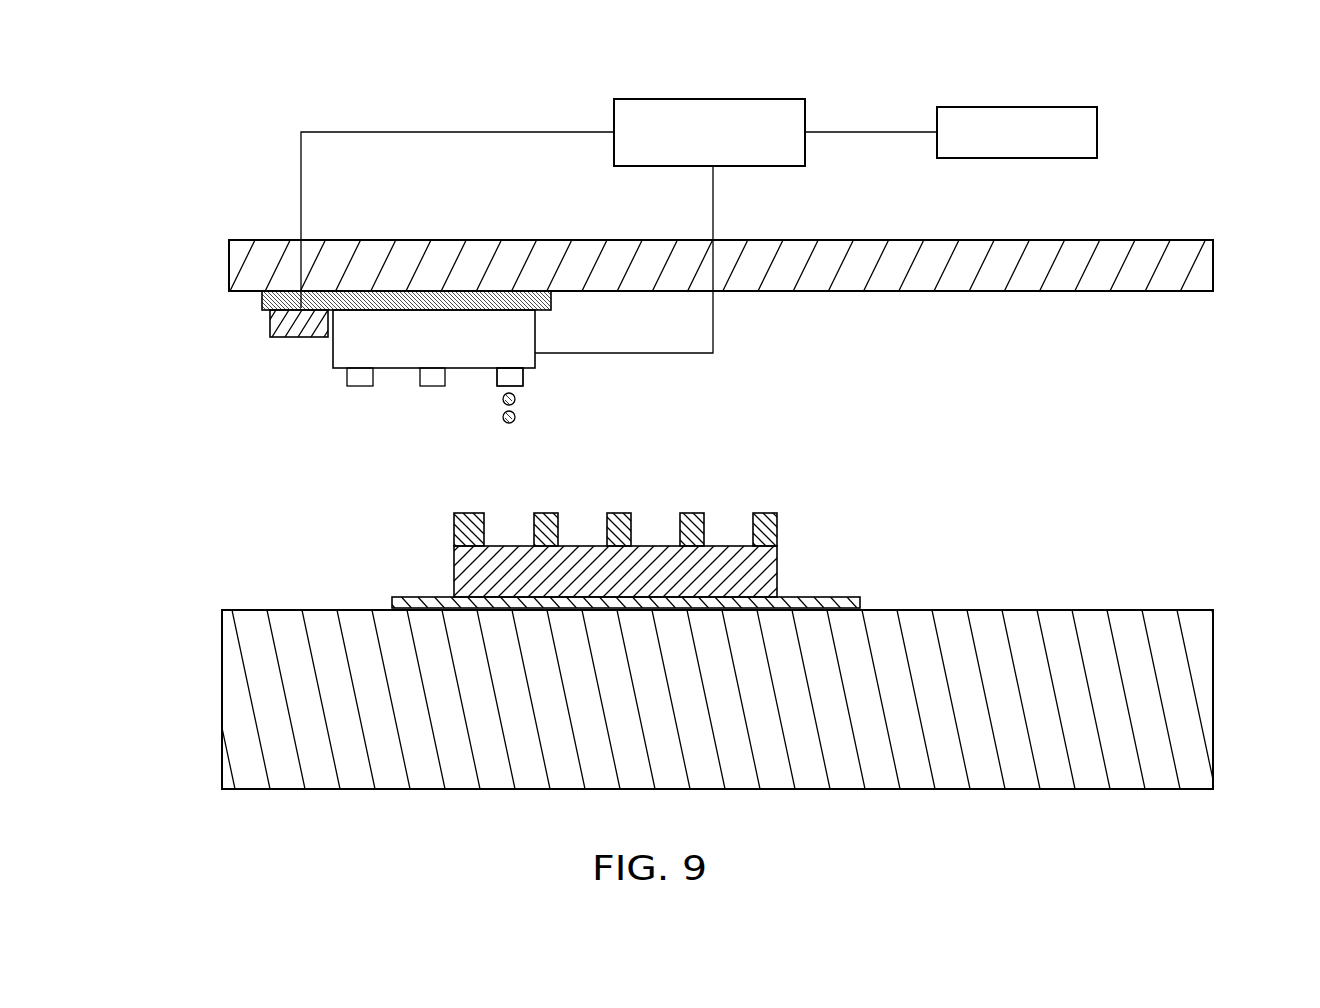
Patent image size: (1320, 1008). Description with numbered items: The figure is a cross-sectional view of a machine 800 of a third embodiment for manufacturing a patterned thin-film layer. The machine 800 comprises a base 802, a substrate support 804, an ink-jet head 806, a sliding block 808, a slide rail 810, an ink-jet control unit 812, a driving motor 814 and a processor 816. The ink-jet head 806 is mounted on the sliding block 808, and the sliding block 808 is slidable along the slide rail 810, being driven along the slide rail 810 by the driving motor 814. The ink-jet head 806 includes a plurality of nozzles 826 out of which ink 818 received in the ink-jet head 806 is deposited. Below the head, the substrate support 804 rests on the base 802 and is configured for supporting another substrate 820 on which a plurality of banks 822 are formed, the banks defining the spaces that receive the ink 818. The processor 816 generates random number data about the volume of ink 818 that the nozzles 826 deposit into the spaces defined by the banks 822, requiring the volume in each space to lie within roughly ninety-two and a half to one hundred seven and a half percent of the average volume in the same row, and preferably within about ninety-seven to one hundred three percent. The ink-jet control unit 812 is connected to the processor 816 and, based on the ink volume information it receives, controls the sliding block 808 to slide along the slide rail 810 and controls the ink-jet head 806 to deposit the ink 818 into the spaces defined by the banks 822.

The machine 800 is at (257, 160).
The base 802 is at (1172, 722).
The substrate support 804 is at (840, 597).
The ink-jet head 806 is at (355, 345).
The sliding block 808 is at (540, 312).
The slide rail 810 is at (1197, 273).
The ink-jet control unit 812 is at (648, 99).
The driving motor 814 is at (268, 320).
The processor 816 is at (1050, 107).
The ink 818 is at (514, 403).
The substrate 820 is at (768, 578).
The printed features 822 is at (725, 513).
The nozzles 826 is at (505, 378).